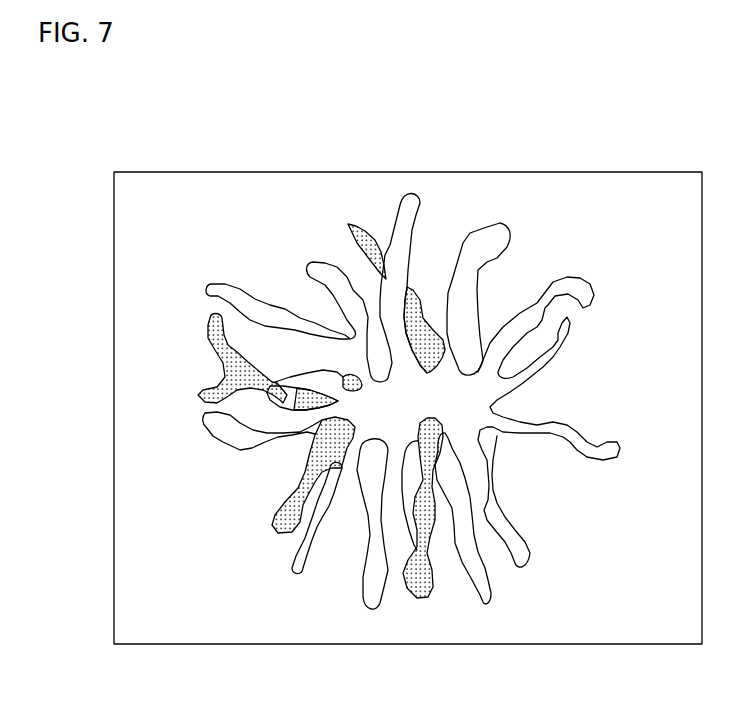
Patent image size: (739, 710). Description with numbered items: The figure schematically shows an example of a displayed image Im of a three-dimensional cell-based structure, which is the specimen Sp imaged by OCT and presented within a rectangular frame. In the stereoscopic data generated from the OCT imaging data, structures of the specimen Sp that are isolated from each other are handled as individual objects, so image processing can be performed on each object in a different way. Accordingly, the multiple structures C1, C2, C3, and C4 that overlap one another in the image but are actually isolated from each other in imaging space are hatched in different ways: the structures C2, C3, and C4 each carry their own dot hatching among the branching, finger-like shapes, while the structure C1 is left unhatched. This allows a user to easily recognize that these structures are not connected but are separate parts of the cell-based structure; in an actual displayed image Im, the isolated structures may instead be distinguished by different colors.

The displayed image Im is at (183, 172).
The specimen Sp is at (152, 291).
The structure C1 is at (507, 230).
The structure C2 is at (275, 523).
The structure C3 is at (348, 226).
The structure C4 is at (430, 598).